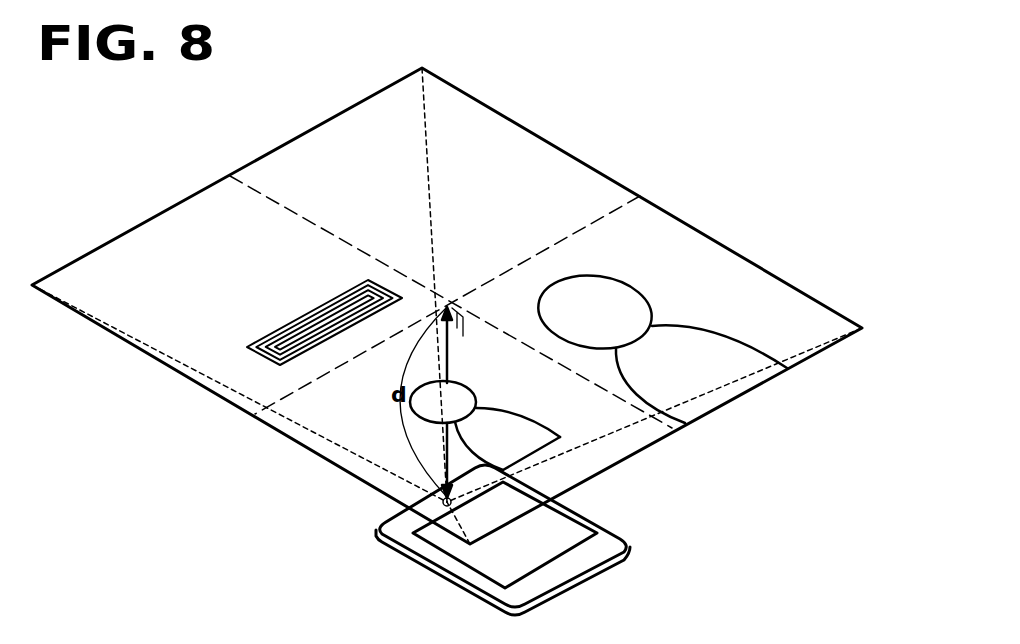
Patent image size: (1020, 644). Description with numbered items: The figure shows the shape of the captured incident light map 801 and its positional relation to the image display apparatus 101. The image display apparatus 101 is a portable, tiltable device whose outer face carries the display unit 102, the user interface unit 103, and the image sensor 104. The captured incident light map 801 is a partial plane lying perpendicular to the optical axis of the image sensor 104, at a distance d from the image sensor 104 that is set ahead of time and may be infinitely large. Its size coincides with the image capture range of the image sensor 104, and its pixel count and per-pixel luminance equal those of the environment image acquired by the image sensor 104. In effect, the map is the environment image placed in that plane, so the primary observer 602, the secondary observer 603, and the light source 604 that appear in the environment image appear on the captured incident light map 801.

The captured incident light map 801 is at (636, 161).
The primary observer 602 is at (612, 287).
The secondary observer 603 is at (463, 392).
The light source 604 is at (327, 301).
The image display apparatus 101 is at (632, 538).
The display unit 102 is at (561, 529).
The user interface unit 103 is at (567, 527).
The image sensor 104 is at (414, 511).